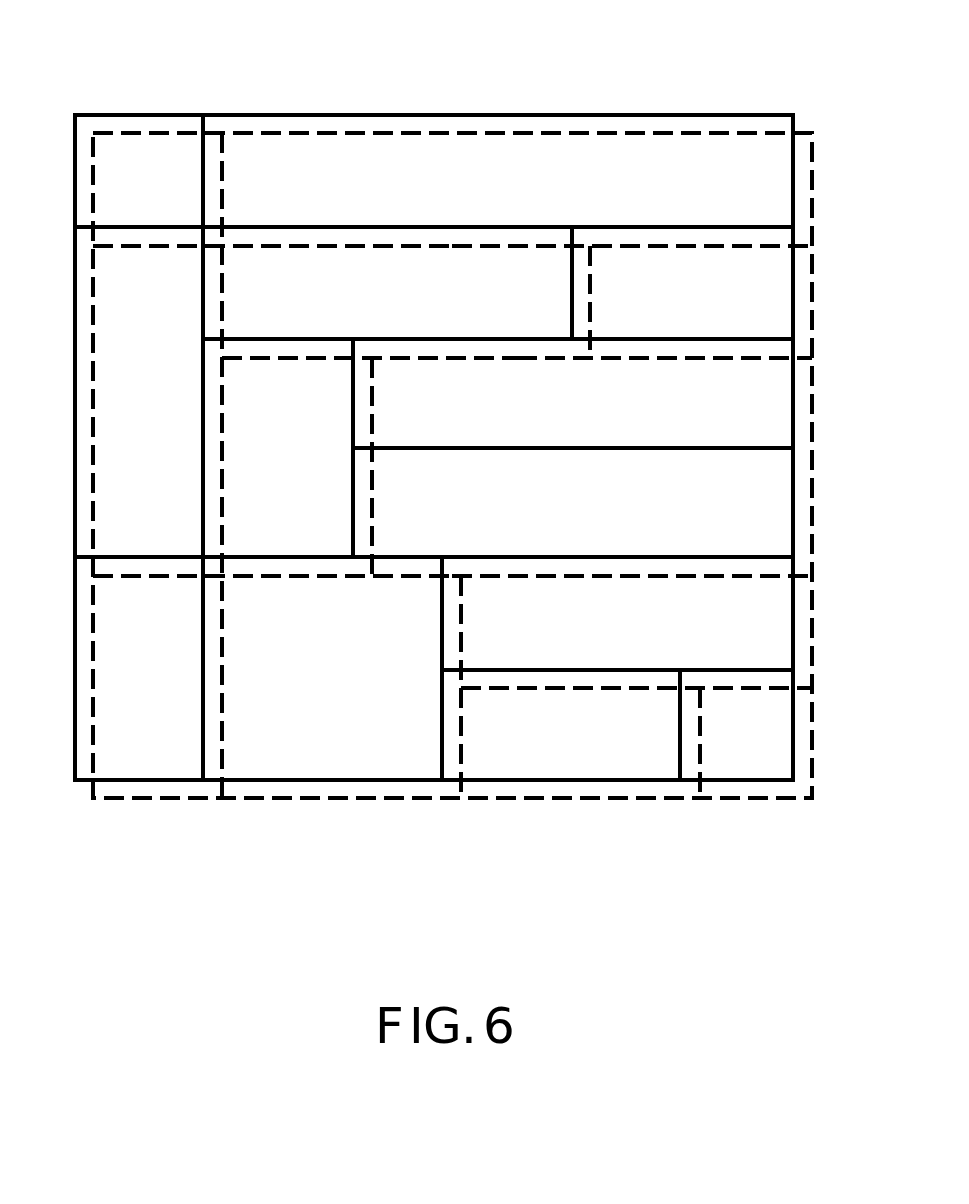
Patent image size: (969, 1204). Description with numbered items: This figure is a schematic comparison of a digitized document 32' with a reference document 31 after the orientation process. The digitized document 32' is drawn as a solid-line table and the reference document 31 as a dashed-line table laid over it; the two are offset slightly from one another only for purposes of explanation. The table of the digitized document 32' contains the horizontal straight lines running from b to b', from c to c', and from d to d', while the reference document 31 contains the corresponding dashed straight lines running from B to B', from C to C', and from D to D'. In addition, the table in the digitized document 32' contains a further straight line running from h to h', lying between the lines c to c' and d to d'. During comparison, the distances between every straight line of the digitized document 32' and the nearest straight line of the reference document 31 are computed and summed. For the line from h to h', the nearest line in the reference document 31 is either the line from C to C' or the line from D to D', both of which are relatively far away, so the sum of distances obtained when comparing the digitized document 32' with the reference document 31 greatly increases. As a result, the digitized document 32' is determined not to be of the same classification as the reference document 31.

The digitized document 32' is at (434, 396).
The reference document 31 is at (812, 522).
The section line b-b' (left end) b is at (240, 230).
The section line b-b' (right end) b' is at (613, 207).
The section line c-c' (left end) c is at (336, 343).
The section line c-c' (right end) c' is at (645, 319).
The straight line hh' endpoint h is at (449, 451).
The straight line hh' endpoint h' is at (683, 428).
The section line d-d' (left end) d is at (240, 560).
The section line d-d' (right end) d' is at (613, 537).
The dashed section line B-B' (left end) B is at (272, 266).
The dashed section line B-B' (right end) B' is at (651, 247).
The straight line CC' endpoint C is at (369, 378).
The straight line CC' endpoint C' is at (684, 362).
The straight line DD' endpoint D is at (272, 595).
The straight line DD' endpoint D' is at (652, 579).